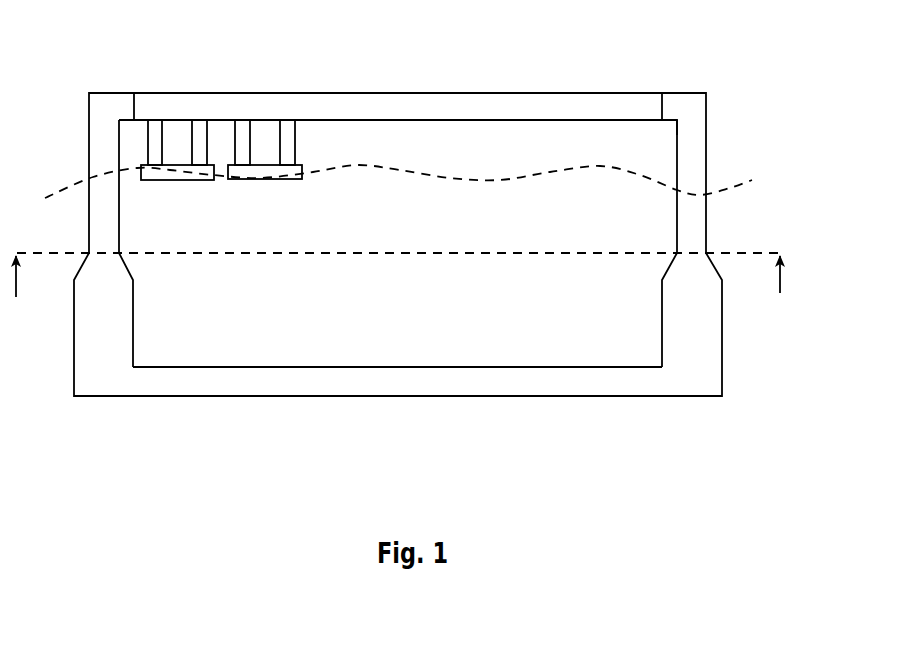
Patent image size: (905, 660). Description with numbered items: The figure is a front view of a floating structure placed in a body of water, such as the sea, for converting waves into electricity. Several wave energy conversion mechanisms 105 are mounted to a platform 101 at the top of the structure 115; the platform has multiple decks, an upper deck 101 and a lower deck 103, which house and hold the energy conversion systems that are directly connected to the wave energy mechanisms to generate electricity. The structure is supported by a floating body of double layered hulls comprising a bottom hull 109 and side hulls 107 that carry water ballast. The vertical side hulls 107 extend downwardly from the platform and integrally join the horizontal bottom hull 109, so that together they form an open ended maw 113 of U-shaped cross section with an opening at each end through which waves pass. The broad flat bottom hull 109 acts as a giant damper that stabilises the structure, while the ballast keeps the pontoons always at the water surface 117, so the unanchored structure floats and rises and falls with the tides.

The platform / upper deck 101 is at (373, 90).
The lower deck 103 is at (414, 125).
The wave energy conversion mechanism 105 is at (175, 129).
The side hull 107 is at (120, 314).
The bottom hull 109 is at (384, 384).
The open ended maw 113 is at (384, 284).
The top of the structure 115 is at (666, 124).
The water surface 117 is at (737, 192).